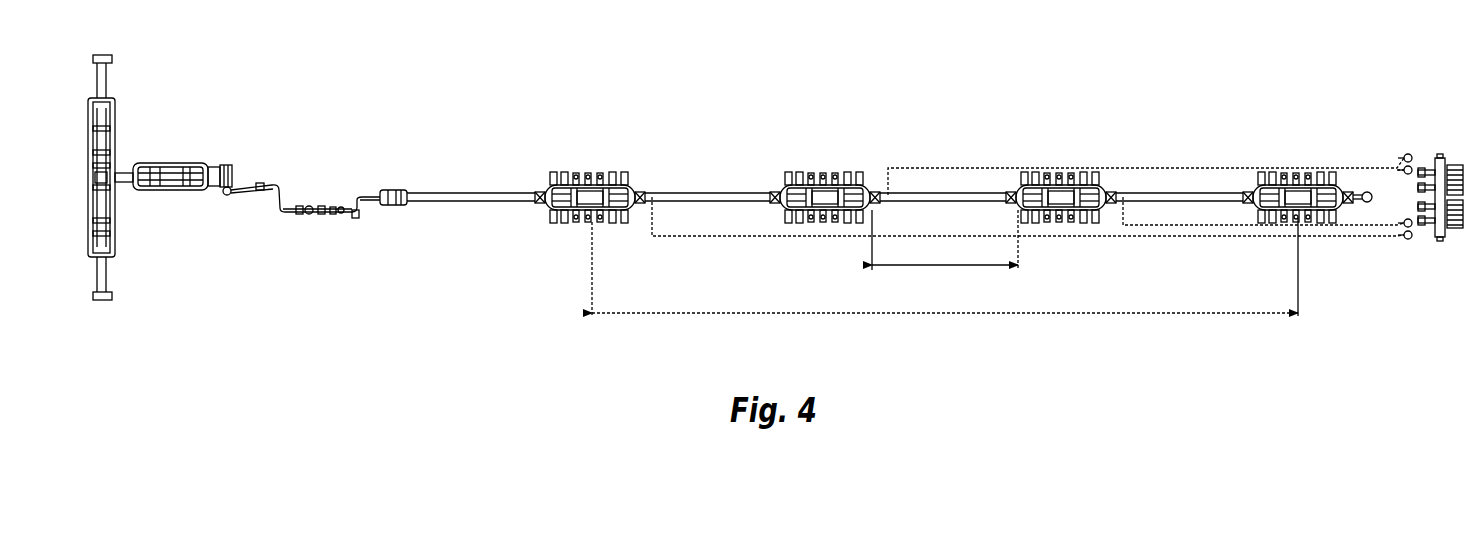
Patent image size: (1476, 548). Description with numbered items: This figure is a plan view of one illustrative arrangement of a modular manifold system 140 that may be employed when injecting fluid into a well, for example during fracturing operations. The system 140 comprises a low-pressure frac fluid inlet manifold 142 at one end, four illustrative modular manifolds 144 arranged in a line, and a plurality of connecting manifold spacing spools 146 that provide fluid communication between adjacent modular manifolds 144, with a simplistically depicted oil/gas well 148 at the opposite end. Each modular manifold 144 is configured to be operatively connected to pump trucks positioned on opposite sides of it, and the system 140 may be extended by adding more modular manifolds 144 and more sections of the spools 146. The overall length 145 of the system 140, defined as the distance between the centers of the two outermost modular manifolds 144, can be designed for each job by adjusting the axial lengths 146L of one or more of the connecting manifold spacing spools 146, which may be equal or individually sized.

The modular manifold system 140 is at (820, 82).
The low-pressure frac fluid inlet manifold 142 is at (1439, 243).
The modular manifold 144 is at (597, 160).
The overall length 145 is at (913, 316).
The connecting manifold spacing spool 146 is at (466, 190).
The axial length 146L is at (950, 270).
The oil/gas well 148 is at (160, 150).